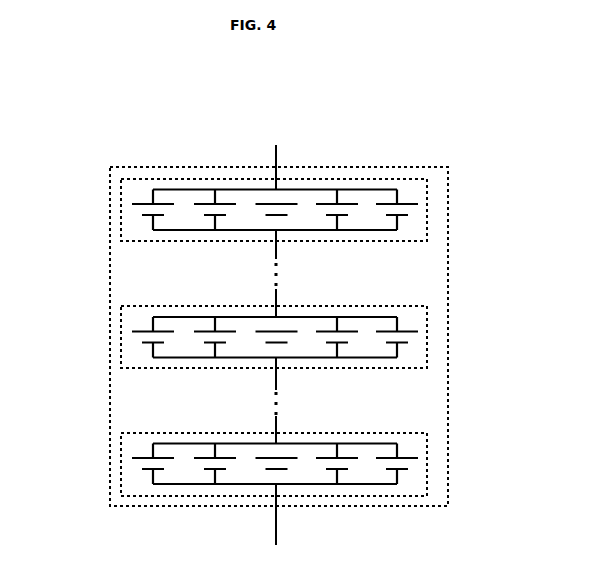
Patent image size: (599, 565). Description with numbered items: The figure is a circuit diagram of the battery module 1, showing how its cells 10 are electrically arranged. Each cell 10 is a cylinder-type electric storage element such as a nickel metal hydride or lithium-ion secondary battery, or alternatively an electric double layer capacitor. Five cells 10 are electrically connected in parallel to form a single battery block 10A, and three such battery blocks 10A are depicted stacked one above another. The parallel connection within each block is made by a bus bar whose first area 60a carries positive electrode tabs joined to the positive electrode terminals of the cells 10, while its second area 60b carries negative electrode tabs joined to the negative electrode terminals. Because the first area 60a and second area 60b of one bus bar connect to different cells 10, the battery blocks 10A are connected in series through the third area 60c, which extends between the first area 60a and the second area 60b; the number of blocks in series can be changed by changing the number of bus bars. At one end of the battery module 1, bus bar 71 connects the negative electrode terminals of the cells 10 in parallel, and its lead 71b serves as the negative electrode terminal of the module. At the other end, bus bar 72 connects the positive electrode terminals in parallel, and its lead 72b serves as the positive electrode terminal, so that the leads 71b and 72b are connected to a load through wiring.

The battery module 1 is at (407, 506).
The cell 10 is at (136, 212).
The battery block 10A is at (428, 229).
The first area 60a is at (357, 317).
The second area 60b is at (242, 230).
The third area 60c is at (277, 250).
The bus bar 71 is at (302, 484).
The lead 71b is at (276, 535).
The bus bar 72 is at (310, 189).
The lead 72b is at (276, 152).